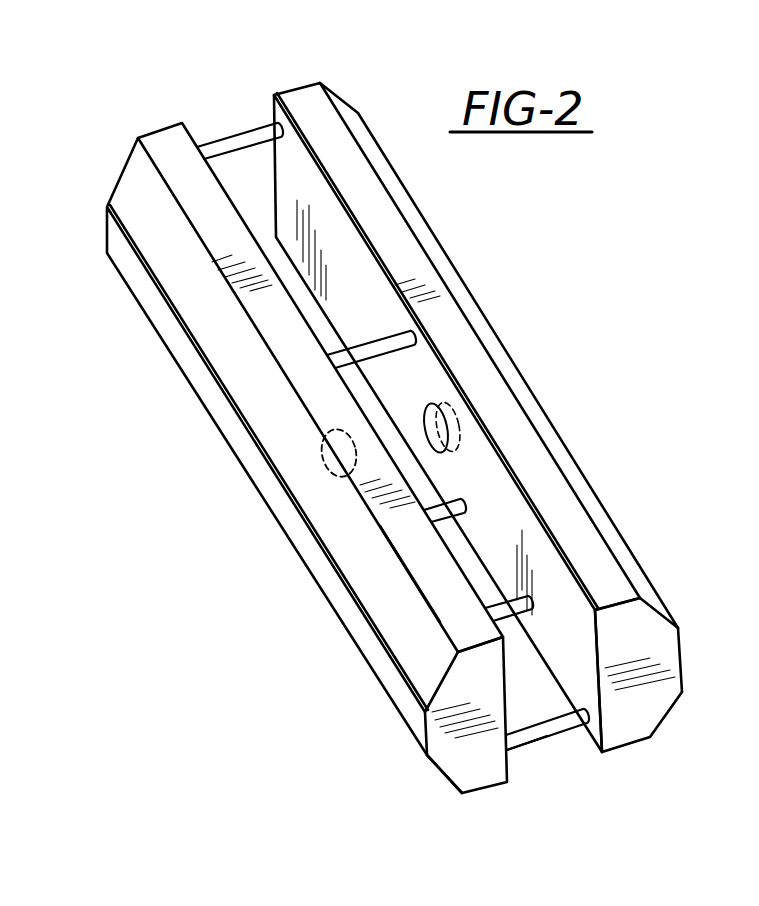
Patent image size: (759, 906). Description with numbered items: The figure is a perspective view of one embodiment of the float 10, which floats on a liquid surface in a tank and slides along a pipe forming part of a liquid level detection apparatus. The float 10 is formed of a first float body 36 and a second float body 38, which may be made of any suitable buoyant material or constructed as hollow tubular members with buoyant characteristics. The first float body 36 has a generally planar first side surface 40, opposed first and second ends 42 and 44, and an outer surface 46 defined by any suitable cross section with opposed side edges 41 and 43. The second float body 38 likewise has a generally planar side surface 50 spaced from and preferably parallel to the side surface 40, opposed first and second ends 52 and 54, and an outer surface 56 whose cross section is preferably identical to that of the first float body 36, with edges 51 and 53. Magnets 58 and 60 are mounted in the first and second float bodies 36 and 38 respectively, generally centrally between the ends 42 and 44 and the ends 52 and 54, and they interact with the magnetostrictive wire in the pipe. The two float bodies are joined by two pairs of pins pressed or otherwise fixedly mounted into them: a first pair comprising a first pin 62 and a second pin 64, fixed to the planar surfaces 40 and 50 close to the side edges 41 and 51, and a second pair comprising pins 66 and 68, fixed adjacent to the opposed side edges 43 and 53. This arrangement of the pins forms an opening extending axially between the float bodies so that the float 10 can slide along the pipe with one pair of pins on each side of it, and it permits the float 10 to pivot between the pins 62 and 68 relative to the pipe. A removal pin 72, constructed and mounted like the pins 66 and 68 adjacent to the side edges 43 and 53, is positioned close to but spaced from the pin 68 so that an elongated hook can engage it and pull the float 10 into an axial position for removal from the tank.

The float 10 is at (563, 305).
The first float body 36 is at (444, 338).
The second float body 38 is at (218, 397).
The first side surface 40 is at (517, 512).
The first side edge 41 is at (603, 530).
The first end 42 is at (668, 692).
The second side edge 43 is at (632, 745).
The second end 44 is at (326, 116).
The outer surface 46 is at (664, 604).
The side surface 50 is at (510, 763).
The edge 51 is at (423, 557).
The first end 52 is at (463, 769).
The edge 53 is at (482, 792).
The second end 54 is at (167, 149).
The outer surface 56 is at (300, 543).
The magnet 58 is at (437, 418).
The magnet 60 is at (322, 453).
The first pin 62 is at (388, 350).
The second pin 64 is at (243, 137).
The pin 66 is at (557, 727).
The pin 68 is at (448, 500).
The removal pin 72 is at (535, 604).